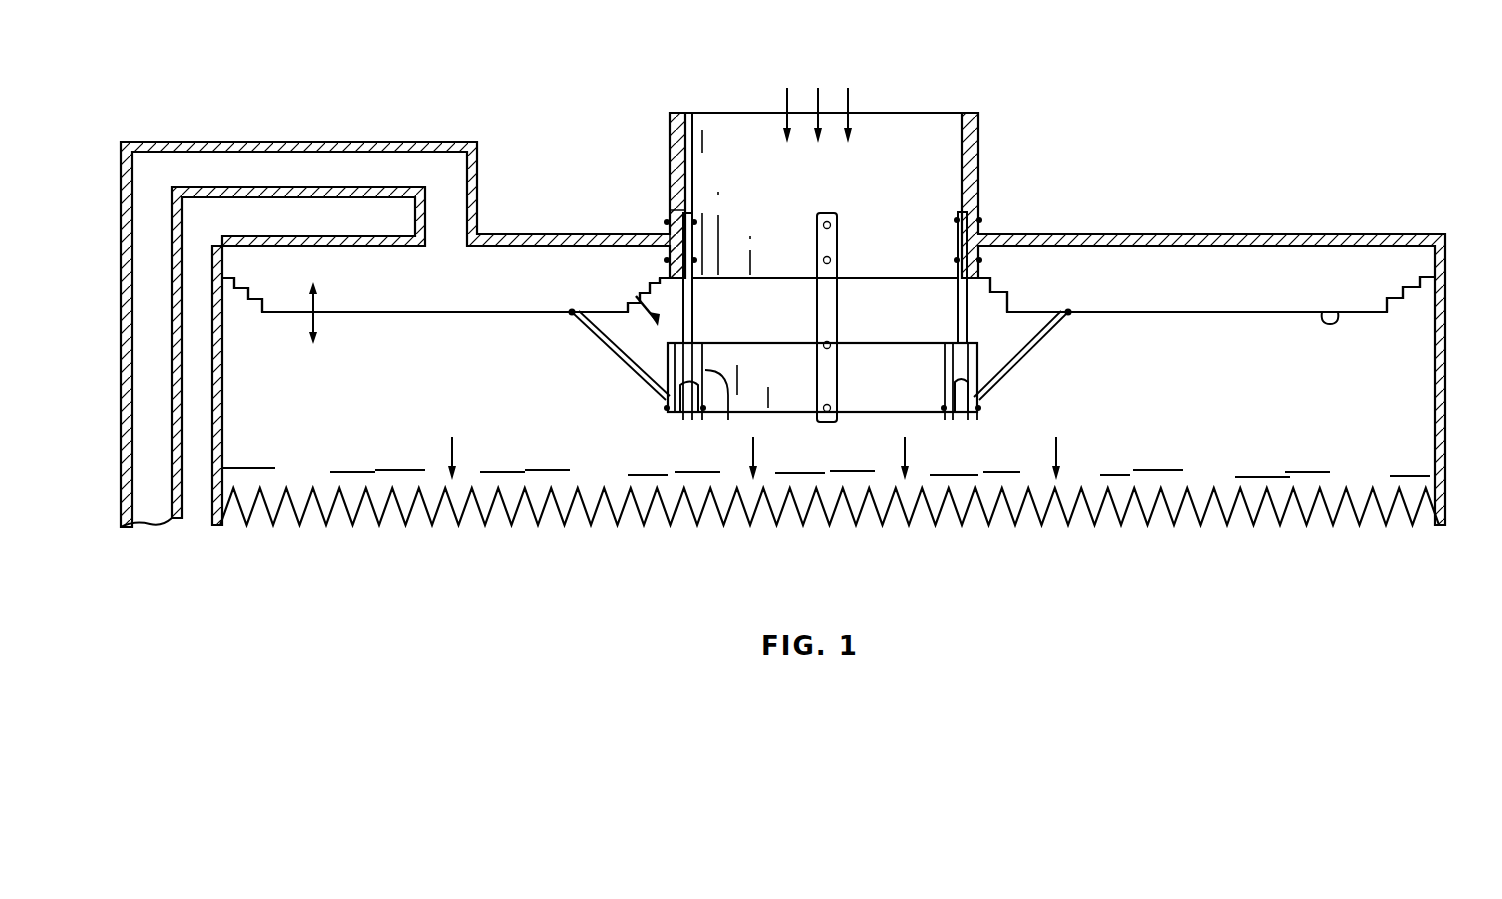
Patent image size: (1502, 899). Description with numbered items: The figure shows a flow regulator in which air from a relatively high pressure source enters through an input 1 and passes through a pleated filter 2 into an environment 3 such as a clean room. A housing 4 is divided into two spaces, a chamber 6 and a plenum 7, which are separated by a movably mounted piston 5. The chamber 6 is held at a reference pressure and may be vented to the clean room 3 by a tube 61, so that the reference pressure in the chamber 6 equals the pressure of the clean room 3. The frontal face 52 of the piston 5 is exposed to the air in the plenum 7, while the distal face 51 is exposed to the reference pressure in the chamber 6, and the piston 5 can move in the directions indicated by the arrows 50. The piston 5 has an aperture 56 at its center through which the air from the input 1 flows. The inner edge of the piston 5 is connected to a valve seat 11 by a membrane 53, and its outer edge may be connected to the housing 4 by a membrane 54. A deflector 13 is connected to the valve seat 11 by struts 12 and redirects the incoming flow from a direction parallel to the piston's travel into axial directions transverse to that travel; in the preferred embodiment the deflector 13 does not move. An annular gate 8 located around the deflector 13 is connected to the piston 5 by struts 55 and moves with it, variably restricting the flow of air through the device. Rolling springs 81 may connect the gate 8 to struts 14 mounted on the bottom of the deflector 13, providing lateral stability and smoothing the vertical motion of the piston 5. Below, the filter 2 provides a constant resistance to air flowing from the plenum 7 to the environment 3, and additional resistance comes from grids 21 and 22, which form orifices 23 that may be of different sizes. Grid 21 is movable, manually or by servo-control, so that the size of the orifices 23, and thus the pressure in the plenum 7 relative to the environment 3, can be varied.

The input 1 is at (878, 97).
The pleated filter 2 is at (1355, 510).
The environment 3 is at (833, 563).
The housing 4 is at (1447, 400).
The piston 5 is at (1262, 296).
The chamber 6 is at (1188, 295).
The plenum 7 is at (1218, 361).
The annular gate 8 is at (650, 364).
The valve seat 11 is at (668, 268).
The struts 12 is at (692, 318).
The deflector 13 is at (838, 345).
The struts 14 is at (822, 399).
The grid 21 is at (1306, 475).
The grid 22 is at (1256, 477).
The orifices 23 is at (598, 475).
The arrows 50 is at (320, 312).
The distal face 51 is at (1292, 312).
The frontal face 52 is at (1336, 312).
The membrane 53 is at (1010, 300).
The membrane 54 is at (252, 290).
The struts 55 is at (1018, 348).
The aperture 56 is at (640, 305).
The tube 61 is at (312, 142).
The rolling springs 81 is at (690, 405).